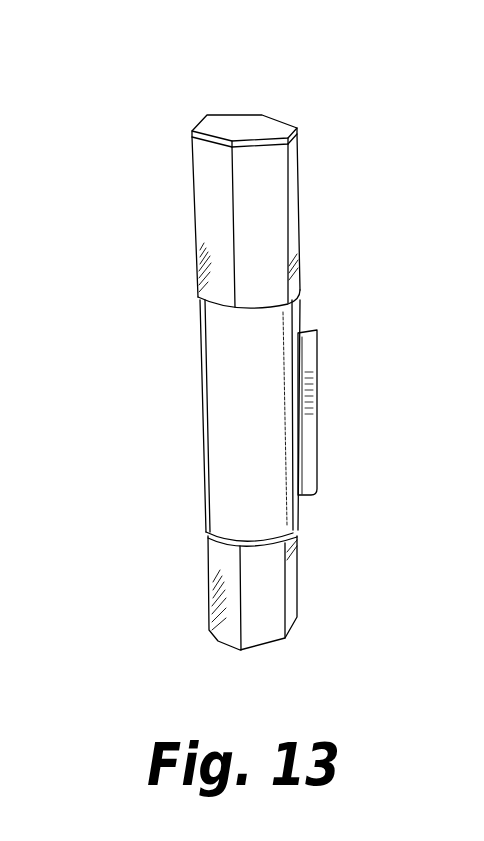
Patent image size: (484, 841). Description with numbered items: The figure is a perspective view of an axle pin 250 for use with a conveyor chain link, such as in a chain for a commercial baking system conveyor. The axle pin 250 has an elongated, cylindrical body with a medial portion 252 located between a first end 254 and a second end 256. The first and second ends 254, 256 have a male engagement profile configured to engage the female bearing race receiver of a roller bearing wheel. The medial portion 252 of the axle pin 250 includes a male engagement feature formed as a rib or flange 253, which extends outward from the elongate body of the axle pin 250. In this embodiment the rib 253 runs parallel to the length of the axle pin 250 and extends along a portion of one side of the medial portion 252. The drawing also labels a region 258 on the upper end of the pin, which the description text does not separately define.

The axle pin 250 is at (125, 398).
The medial portion 252 is at (335, 290).
The rib 253 is at (302, 497).
The first end 254 is at (197, 103).
The second end 256 is at (213, 650).
The top cap 258 is at (297, 199).